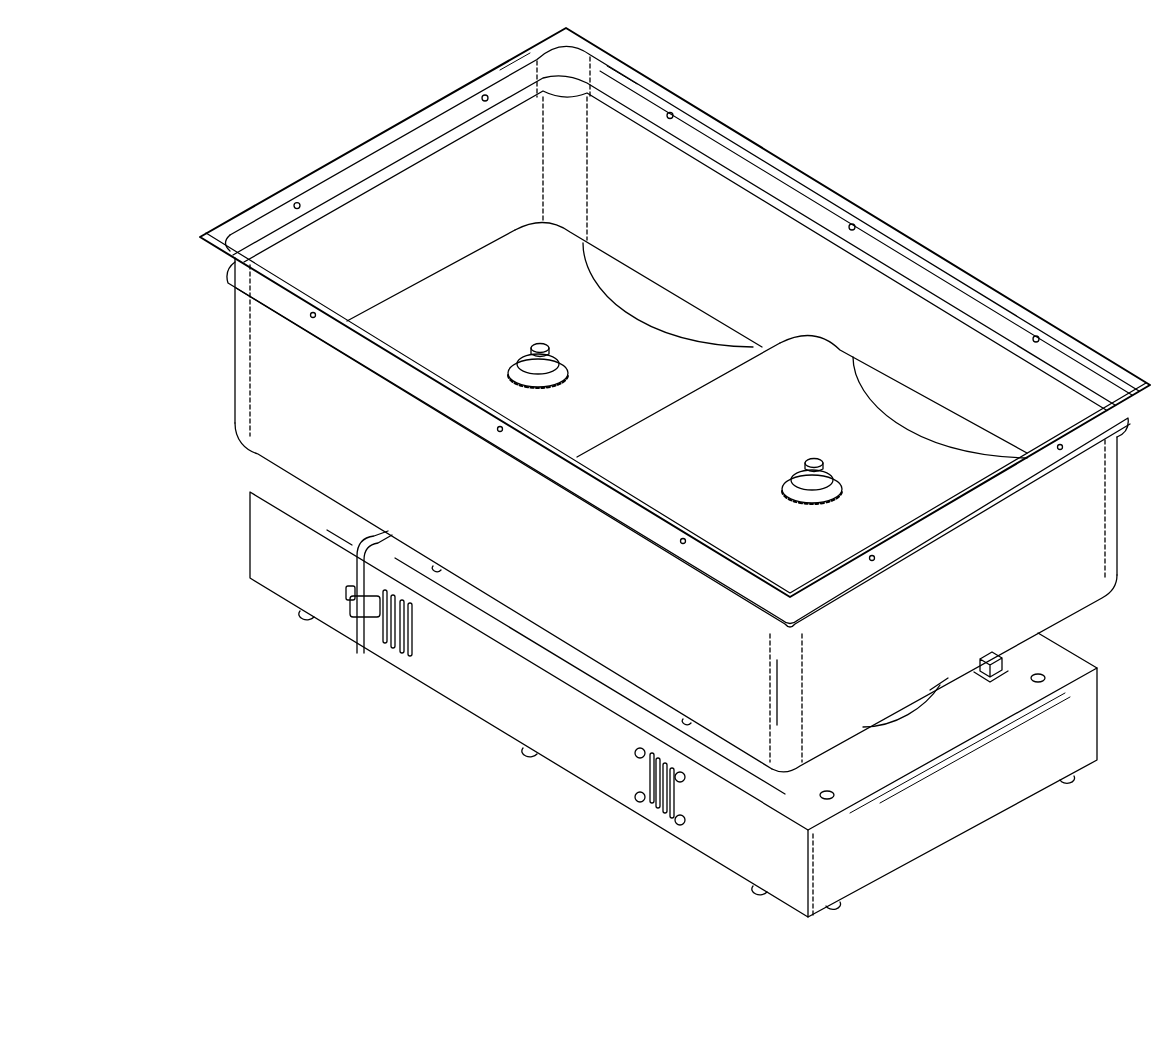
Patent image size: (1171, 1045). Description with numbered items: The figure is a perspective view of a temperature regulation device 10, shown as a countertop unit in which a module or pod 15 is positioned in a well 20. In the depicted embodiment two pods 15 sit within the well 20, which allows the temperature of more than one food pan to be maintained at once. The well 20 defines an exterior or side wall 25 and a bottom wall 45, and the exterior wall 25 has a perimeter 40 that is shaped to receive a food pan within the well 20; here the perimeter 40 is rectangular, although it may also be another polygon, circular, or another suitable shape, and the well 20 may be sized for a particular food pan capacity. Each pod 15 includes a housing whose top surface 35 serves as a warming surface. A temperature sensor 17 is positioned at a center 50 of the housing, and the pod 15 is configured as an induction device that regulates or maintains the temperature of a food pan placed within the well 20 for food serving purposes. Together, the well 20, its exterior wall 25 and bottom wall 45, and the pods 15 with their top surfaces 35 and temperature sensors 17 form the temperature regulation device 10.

The temperature regulation device 10 is at (982, 128).
The pod 15 is at (563, 240).
The temperature sensor 17 is at (543, 345).
The well 20 is at (233, 360).
The exterior wall 25 is at (1088, 582).
The top surface 35 is at (481, 330).
The perimeter 40 is at (1067, 338).
The bottom wall 45 is at (257, 452).
The center 50 is at (565, 350).